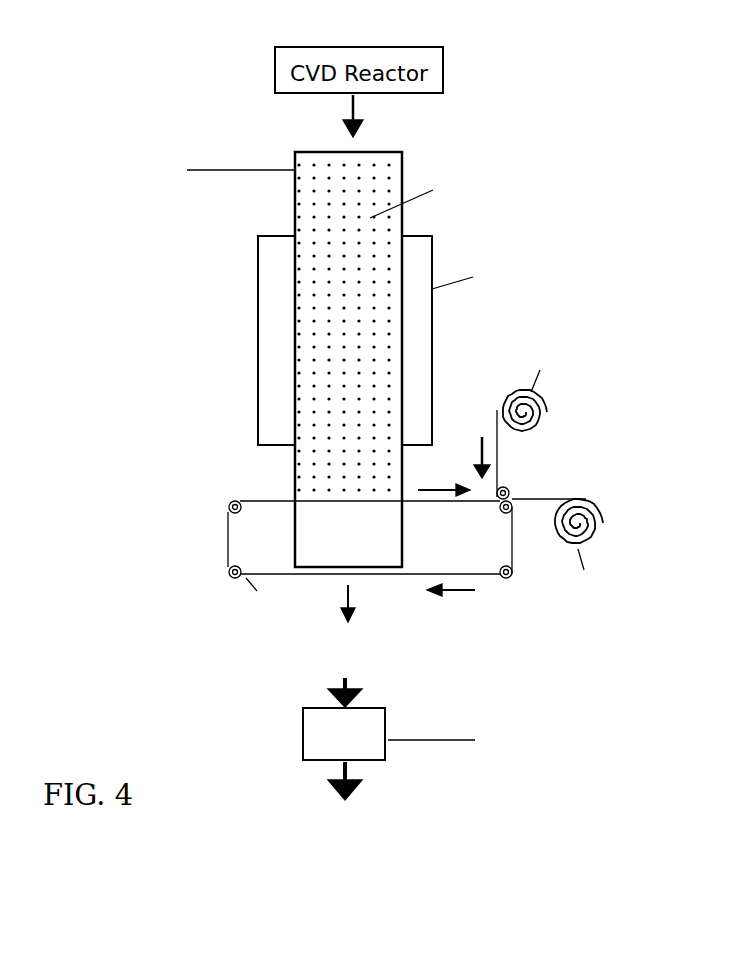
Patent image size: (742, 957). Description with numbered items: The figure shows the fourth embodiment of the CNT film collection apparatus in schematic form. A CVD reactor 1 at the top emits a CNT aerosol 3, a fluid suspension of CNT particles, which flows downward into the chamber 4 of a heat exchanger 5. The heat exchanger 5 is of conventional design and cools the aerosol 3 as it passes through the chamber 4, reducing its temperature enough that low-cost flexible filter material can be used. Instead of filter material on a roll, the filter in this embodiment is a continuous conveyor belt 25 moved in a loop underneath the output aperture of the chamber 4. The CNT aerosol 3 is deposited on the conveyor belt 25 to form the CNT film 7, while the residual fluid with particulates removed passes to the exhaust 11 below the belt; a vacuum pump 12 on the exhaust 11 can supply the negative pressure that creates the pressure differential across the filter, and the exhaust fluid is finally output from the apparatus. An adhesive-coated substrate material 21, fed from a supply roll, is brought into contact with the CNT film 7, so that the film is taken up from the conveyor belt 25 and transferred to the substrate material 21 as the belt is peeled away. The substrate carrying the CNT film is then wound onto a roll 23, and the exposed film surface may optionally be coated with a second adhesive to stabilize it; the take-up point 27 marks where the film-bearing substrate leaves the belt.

The CVD reactor 1 is at (356, 108).
The CNT aerosol 3 is at (415, 198).
The chamber 4 is at (252, 170).
The heat exchanger 5 is at (445, 285).
The CNT film 7 is at (412, 501).
The exhaust 11 is at (352, 600).
The vacuum pump 12 is at (443, 740).
The substrate material 21 is at (620, 365).
The roll 23 is at (590, 612).
The conveyor belt 25 is at (228, 545).
The take-up roll 27 is at (555, 499).